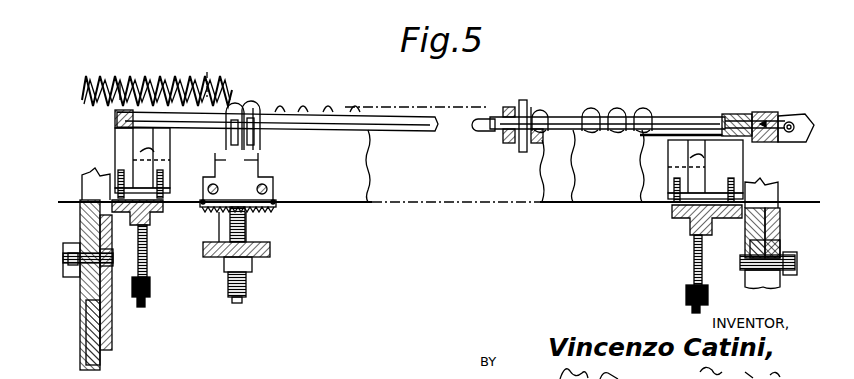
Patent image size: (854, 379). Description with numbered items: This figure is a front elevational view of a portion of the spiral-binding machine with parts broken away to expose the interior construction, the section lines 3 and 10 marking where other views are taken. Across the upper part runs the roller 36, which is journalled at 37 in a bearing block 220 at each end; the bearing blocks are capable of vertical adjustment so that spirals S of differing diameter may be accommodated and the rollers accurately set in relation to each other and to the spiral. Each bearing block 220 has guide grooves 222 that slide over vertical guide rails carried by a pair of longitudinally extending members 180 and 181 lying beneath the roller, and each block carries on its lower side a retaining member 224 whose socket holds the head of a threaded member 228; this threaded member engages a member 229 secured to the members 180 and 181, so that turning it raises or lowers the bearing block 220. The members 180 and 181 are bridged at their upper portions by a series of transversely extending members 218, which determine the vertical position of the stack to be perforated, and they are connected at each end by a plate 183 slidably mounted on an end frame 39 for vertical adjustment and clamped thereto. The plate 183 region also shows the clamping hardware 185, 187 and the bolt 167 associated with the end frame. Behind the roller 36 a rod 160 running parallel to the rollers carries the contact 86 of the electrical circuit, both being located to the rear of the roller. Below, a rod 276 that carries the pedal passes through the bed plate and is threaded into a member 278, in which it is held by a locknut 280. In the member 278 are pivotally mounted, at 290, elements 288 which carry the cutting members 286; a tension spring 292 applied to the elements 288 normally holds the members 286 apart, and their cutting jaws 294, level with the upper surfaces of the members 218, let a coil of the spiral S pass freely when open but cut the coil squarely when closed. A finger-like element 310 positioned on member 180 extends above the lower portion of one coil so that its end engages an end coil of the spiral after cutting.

The journal 37 is at (94, 112).
The spiral S is at (122, 83).
The finger-like element 310 is at (197, 97).
The cutting member 286 is at (233, 107).
The section line 3 is at (207, 50).
The cutting jaw 294 is at (253, 108).
The transversely extending member 218 is at (303, 108).
The roller 36 is at (392, 120).
The section line 10 is at (489, 80).
The contact 86 is at (527, 105).
The bearing block 220 is at (118, 138).
The retaining member 224 is at (112, 172).
The guide groove 222 is at (143, 148).
The pivoted element 288 is at (218, 172).
The pivot 290 is at (213, 188).
The end frame 39 is at (80, 212).
The rod 160 is at (480, 130).
The tension spring 292 is at (258, 213).
The threaded member support 229 is at (147, 225).
The threaded member 278 is at (270, 257).
The locknut 280 is at (250, 267).
The rod 276 is at (236, 296).
The longitudinally extending member 181 is at (553, 177).
The longitudinally extending member 180 is at (580, 182).
The threaded member 228 is at (692, 290).
The foot block 187 is at (745, 287).
The clip 185 is at (68, 269).
The threaded bolt 167 is at (90, 286).
The plate 183 is at (112, 336).